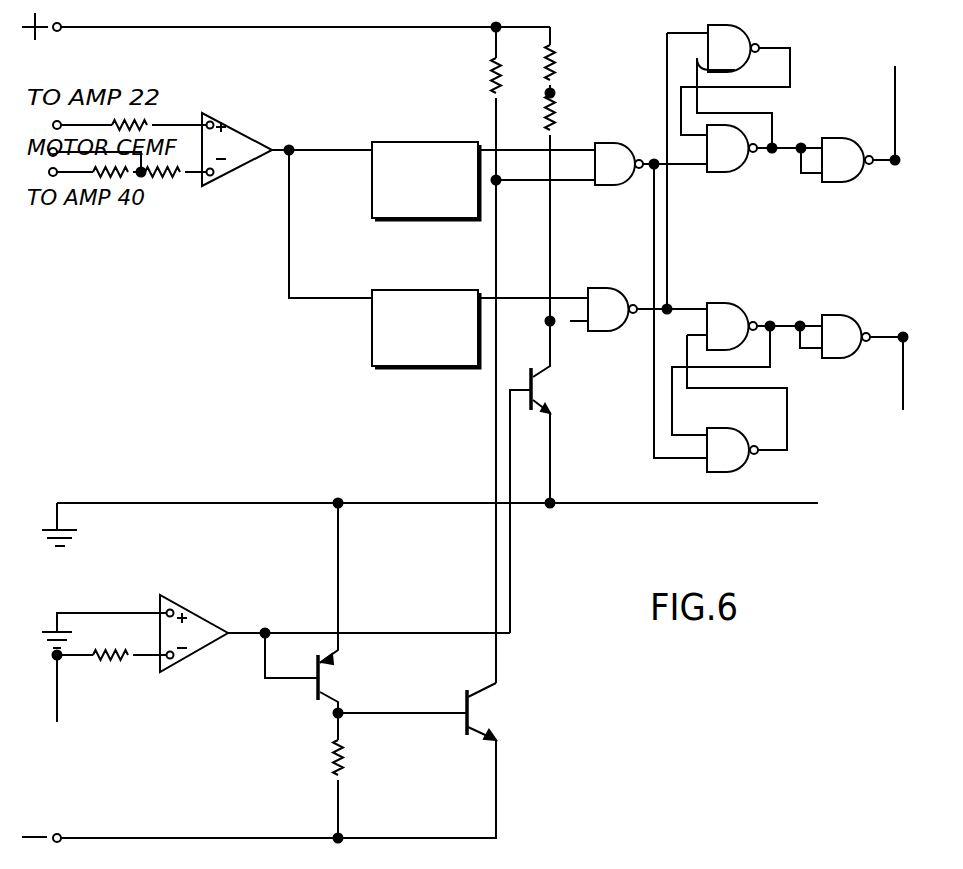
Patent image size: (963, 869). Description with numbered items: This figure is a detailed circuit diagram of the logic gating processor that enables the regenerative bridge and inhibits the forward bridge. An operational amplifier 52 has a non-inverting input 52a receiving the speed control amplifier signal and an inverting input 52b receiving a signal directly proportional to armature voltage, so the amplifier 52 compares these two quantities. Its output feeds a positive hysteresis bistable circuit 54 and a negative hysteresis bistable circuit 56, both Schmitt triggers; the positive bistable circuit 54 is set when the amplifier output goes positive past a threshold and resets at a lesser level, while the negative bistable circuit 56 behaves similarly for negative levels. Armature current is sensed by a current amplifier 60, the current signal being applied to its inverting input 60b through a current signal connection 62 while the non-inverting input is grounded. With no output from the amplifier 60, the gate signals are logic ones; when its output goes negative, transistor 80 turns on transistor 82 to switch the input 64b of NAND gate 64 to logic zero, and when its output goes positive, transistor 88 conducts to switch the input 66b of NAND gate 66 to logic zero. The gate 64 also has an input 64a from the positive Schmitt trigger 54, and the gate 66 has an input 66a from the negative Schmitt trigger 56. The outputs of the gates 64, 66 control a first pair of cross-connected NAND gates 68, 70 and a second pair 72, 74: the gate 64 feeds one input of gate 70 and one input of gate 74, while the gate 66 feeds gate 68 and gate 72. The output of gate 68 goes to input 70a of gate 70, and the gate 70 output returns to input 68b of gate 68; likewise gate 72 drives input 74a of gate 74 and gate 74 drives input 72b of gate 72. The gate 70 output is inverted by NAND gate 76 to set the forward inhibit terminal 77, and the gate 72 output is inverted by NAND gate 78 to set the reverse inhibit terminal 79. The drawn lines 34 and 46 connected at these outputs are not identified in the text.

The NAND gate 34 is at (895, 110).
The output line 46 is at (903, 378).
The operational amplifier 52 is at (258, 140).
The non-inverting input 52a is at (212, 120).
The inverting input 52b is at (212, 188).
The positive hysteresis amplifier bistable circuit 54 is at (445, 118).
The negative hysteresis amplifier bistable circuit 56 is at (440, 270).
The current amplifier 60 is at (195, 625).
The input 60b is at (150, 658).
The current signal connection 62 is at (60, 693).
The NAND gate 64 is at (628, 138).
The input 64a is at (585, 148).
The input 64b is at (585, 180).
The NAND gate 66 is at (625, 283).
The input 66a is at (580, 296).
The input 66b is at (585, 325).
The NAND gate 68 is at (742, 45).
The input 68b is at (738, 74).
The NAND gate 70 is at (743, 162).
The input 70a is at (706, 140).
The NAND gate 72 is at (742, 312).
The input 72b is at (710, 348).
The NAND gate 74 is at (740, 432).
The input 74a is at (698, 432).
The inverting NAND gate 76 is at (828, 140).
The forward inhibit terminal 77 is at (895, 168).
The inverting NAND gate 78 is at (840, 300).
The reverse inhibit terminal 79 is at (903, 333).
The transistor 80 is at (333, 680).
The transistor 82 is at (476, 712).
The transistor 88 is at (542, 390).